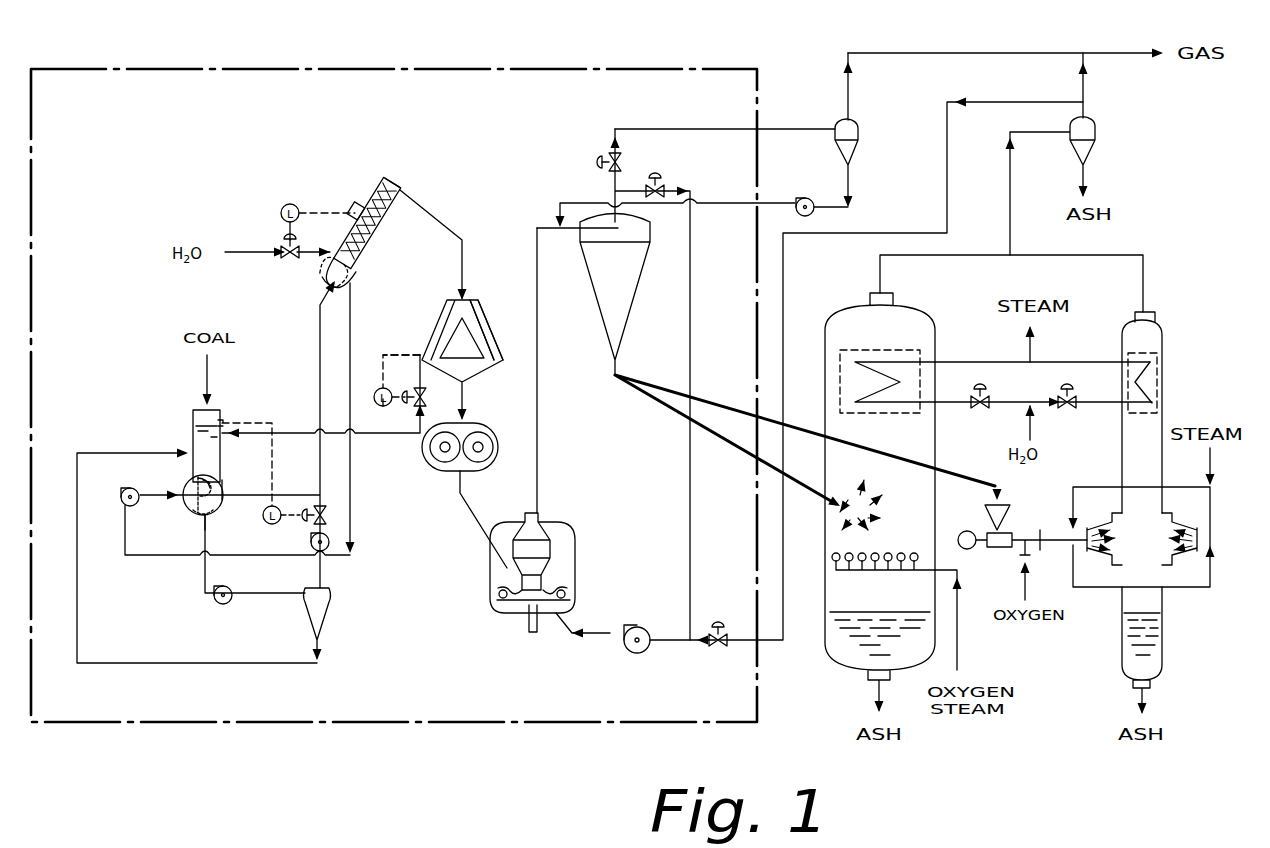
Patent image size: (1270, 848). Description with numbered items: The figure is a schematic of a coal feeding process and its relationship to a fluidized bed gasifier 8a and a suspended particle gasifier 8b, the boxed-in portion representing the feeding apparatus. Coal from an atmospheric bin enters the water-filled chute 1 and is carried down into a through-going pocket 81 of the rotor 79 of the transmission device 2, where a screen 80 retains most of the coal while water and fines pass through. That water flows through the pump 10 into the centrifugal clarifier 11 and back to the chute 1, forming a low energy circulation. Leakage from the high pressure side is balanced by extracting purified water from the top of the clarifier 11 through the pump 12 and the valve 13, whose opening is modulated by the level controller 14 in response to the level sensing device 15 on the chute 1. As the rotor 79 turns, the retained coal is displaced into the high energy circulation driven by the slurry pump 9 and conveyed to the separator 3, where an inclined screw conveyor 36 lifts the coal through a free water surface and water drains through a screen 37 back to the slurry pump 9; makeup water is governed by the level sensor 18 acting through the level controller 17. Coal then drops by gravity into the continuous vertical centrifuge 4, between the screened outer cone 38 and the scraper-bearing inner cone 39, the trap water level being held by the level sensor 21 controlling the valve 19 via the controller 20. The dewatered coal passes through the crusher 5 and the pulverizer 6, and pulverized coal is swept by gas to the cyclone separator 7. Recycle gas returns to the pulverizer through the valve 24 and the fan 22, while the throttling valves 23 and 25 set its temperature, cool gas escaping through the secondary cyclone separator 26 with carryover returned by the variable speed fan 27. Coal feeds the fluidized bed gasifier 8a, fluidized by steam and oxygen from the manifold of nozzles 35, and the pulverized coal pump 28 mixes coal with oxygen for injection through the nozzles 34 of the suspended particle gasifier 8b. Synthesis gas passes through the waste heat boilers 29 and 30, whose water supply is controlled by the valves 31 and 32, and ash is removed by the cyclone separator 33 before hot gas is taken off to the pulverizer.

The chute 1 is at (193, 426).
The transmission device 2 is at (180, 516).
The separator 3 is at (394, 224).
The continuous vertical centrifuge 4 is at (478, 300).
The crusher 5 is at (504, 440).
The pulverizer 6 is at (578, 535).
The cyclone separator 7 is at (638, 293).
The fluidized bed gasifier 8a is at (918, 318).
The suspended particle gasifier 8b is at (1165, 328).
The slurry pump 9 is at (124, 493).
The pump 10 is at (226, 604).
The centrifugal clarifier 11 is at (325, 610).
The pump 12 is at (328, 541).
The valve 13 is at (330, 515).
The level controller 14 is at (271, 525).
The level sensing device 15 is at (220, 415).
The level controller 17 is at (290, 204).
The level sensor 18 is at (366, 202).
The valve 19 is at (420, 425).
The controller 20 is at (374, 404).
The level sensor 21 is at (422, 348).
The fan 22 is at (637, 654).
The valve 23 is at (718, 648).
The valve 24 is at (662, 186).
The valve 25 is at (602, 154).
The secondary cyclone separator 26 is at (858, 144).
The variable speed fan 27 is at (812, 178).
The pulverized coal pump 28 is at (1012, 510).
The waste heat boiler 29 is at (884, 413).
The waste heat boiler 30 is at (1143, 413).
The valve 31 is at (980, 410).
The valve 32 is at (1067, 408).
The cyclone separator 33 is at (1096, 140).
The nozzles 34 is at (1096, 555).
The manifold of nozzles 35 is at (891, 572).
The inclined screw conveyor 36 is at (400, 187).
The screen 37 is at (371, 260).
The outer cone 38 is at (486, 320).
The inner cone 39 is at (489, 339).
The rotor 79 is at (222, 484).
The screen 80 is at (214, 520).
The pockets 81 is at (192, 478).